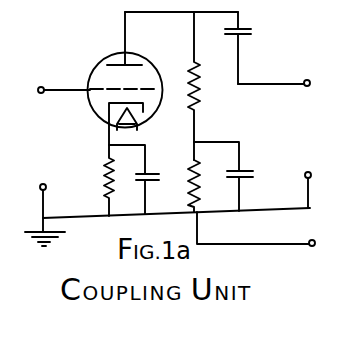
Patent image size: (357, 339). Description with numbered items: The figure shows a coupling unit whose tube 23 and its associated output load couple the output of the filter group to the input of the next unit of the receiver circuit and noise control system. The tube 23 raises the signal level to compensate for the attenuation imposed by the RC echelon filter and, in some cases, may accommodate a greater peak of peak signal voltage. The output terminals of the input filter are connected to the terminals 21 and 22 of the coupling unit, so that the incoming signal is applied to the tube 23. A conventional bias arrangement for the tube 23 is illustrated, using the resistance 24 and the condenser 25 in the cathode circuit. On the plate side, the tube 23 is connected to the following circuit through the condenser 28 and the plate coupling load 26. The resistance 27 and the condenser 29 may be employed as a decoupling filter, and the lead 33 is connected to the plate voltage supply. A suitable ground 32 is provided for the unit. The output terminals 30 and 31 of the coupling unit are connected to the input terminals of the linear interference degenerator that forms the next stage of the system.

The terminal 21 is at (40, 94).
The terminal 22 is at (40, 190).
The tube 23 is at (98, 66).
The resistance 24 is at (105, 190).
The condenser 25 is at (142, 184).
The plate coupling load 26 is at (188, 104).
The resistance 27 is at (187, 181).
The condenser 28 is at (226, 33).
The condenser 29 is at (227, 178).
The output terminal 30 is at (304, 86).
The output terminal 31 is at (304, 180).
The ground 32 is at (32, 232).
The lead 33 is at (309, 239).